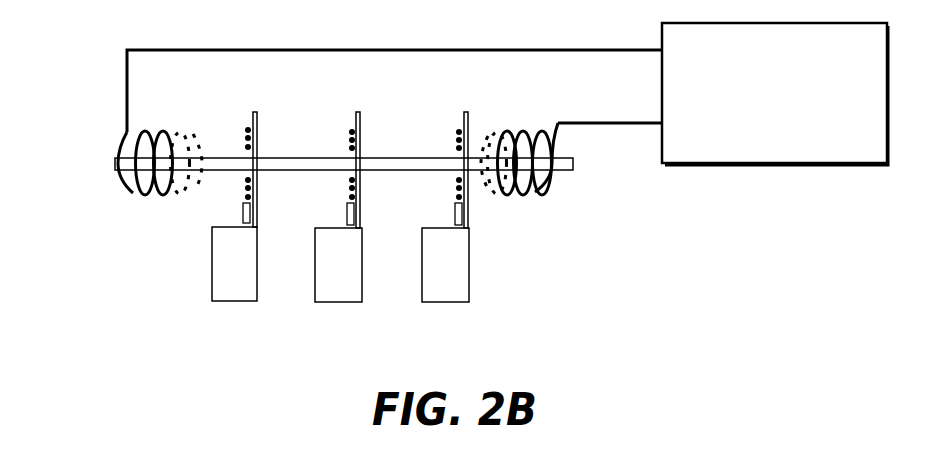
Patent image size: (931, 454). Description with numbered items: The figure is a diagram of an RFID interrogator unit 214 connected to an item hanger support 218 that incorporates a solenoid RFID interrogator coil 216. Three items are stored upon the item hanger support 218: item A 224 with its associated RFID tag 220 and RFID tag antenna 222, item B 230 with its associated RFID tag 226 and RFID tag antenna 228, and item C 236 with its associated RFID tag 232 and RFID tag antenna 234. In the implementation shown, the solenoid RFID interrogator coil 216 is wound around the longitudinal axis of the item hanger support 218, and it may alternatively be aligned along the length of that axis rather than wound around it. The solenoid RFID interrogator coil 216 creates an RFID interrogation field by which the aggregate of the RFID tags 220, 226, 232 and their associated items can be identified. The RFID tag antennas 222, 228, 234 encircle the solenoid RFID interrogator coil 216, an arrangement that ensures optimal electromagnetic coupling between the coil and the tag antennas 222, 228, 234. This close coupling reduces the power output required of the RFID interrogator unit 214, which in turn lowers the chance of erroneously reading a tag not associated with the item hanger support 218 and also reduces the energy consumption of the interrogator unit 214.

The RFID interrogator unit 214 is at (775, 163).
The solenoid RFID interrogator coil 216 is at (130, 190).
The item hanger support 218 is at (573, 170).
The RFID tag 220 is at (243, 213).
The RFID tag antenna 222 is at (249, 127).
The item A 224 is at (245, 302).
The RFID tag 226 is at (347, 212).
The RFID tag antenna 228 is at (352, 128).
The item B 230 is at (348, 303).
The RFID tag 232 is at (455, 212).
The RFID tag antenna 234 is at (459, 128).
The item C 236 is at (453, 303).